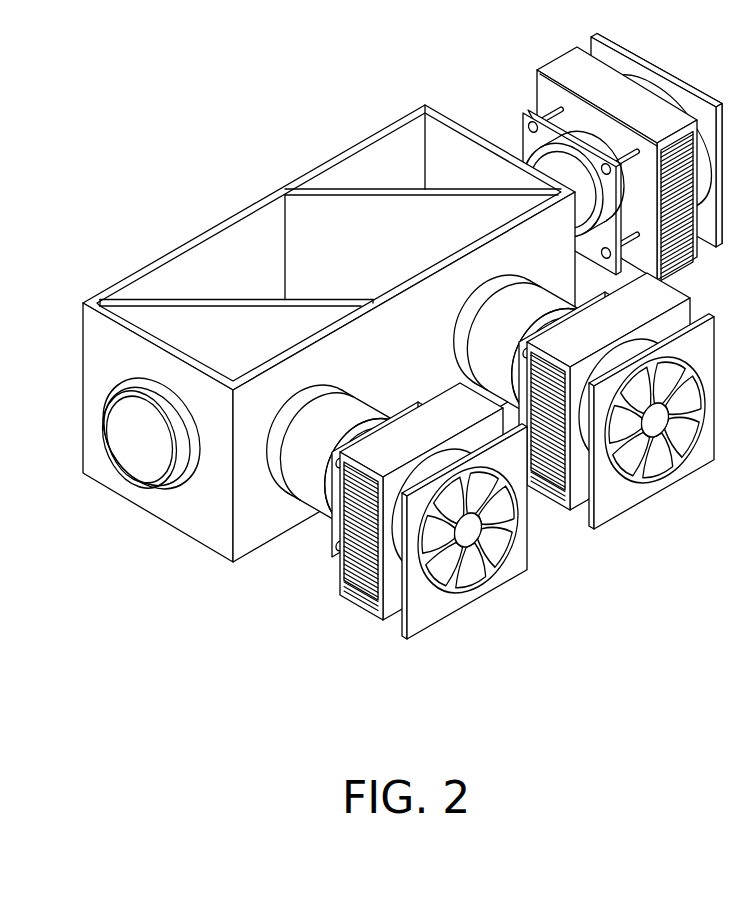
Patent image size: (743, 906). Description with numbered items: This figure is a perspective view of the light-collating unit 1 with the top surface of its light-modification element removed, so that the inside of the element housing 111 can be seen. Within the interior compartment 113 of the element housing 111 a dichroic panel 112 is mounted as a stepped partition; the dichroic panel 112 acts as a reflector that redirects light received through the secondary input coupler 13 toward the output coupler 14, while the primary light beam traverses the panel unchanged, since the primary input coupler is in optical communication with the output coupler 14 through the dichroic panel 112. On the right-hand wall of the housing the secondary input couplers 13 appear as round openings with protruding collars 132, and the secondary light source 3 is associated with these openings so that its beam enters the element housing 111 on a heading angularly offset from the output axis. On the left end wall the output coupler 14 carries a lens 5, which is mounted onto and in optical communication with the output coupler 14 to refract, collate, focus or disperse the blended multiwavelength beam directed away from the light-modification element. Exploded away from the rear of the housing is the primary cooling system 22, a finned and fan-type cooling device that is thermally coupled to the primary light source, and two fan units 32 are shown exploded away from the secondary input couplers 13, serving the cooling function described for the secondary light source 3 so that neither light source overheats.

The light-collating unit 1 is at (262, 116).
The element housing 111 is at (193, 242).
The dichroic panel 112 is at (162, 302).
The interior compartment 113 is at (262, 238).
The secondary input coupler 13 is at (497, 282).
The annular flange 132 is at (312, 395).
The output coupler 14 is at (188, 463).
The lens 5 is at (148, 453).
The primary cooling system 22 is at (567, 68).
The secondary light source 3 is at (503, 320).
The fan 32 is at (430, 608).